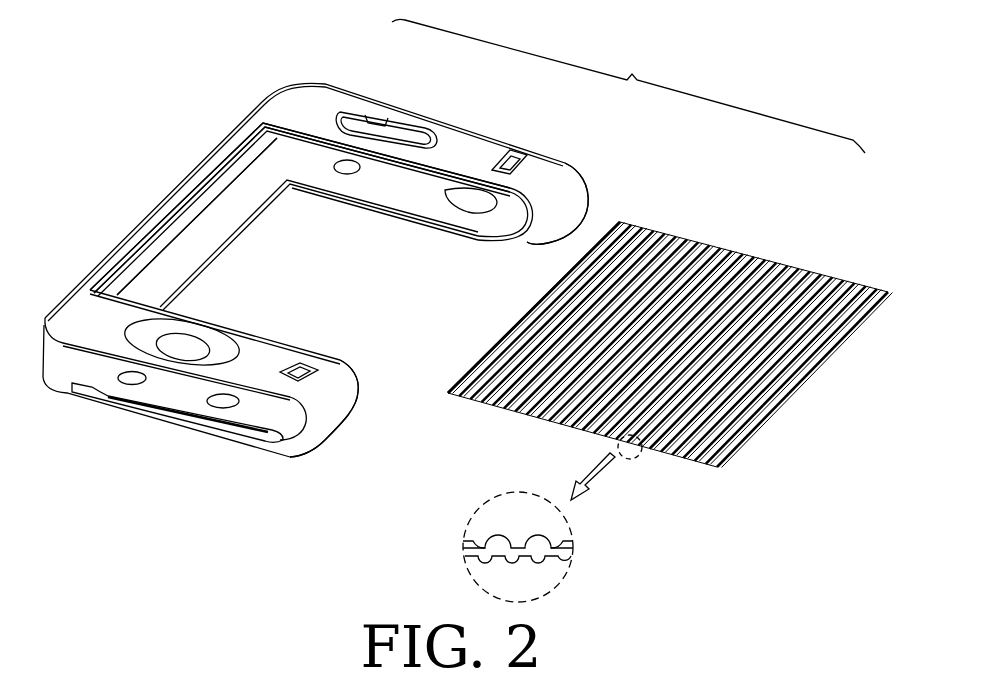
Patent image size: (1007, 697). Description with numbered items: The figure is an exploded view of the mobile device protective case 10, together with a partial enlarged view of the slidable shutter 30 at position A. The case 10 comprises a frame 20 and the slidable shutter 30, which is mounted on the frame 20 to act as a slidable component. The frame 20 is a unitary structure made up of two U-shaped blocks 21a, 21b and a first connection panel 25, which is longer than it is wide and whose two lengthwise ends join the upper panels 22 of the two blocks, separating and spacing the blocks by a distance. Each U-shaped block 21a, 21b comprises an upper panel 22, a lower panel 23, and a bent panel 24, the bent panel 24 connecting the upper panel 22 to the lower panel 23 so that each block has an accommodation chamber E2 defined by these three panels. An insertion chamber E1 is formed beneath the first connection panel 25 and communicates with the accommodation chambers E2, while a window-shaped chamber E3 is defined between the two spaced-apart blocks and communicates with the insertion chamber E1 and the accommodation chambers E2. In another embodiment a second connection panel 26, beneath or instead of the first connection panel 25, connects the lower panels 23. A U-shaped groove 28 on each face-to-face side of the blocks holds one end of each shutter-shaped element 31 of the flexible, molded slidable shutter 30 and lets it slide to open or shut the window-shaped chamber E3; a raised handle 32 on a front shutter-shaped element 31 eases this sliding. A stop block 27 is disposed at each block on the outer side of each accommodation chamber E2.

The mobile device protective case 10 is at (628, 86).
The frame 20 is at (385, 85).
The U-shaped block 21a is at (578, 174).
The U-shaped block 21b is at (325, 430).
The upper panel 22 is at (325, 108).
The lower panel 23 is at (298, 170).
The bent panel 24 is at (545, 200).
The first connection panel 25 is at (183, 193).
The second connection panel 26 is at (153, 232).
The stop block 27 is at (75, 393).
The U-shaped groove 28 is at (446, 192).
The slidable shutter 30 is at (760, 224).
The shutter-shaped element 31 is at (498, 540).
The raised handle 32 is at (530, 318).
The insertion chamber E1 is at (198, 228).
The accommodation chamber E2 is at (383, 167).
The window-shaped chamber E3 is at (243, 212).
The position A is at (554, 518).